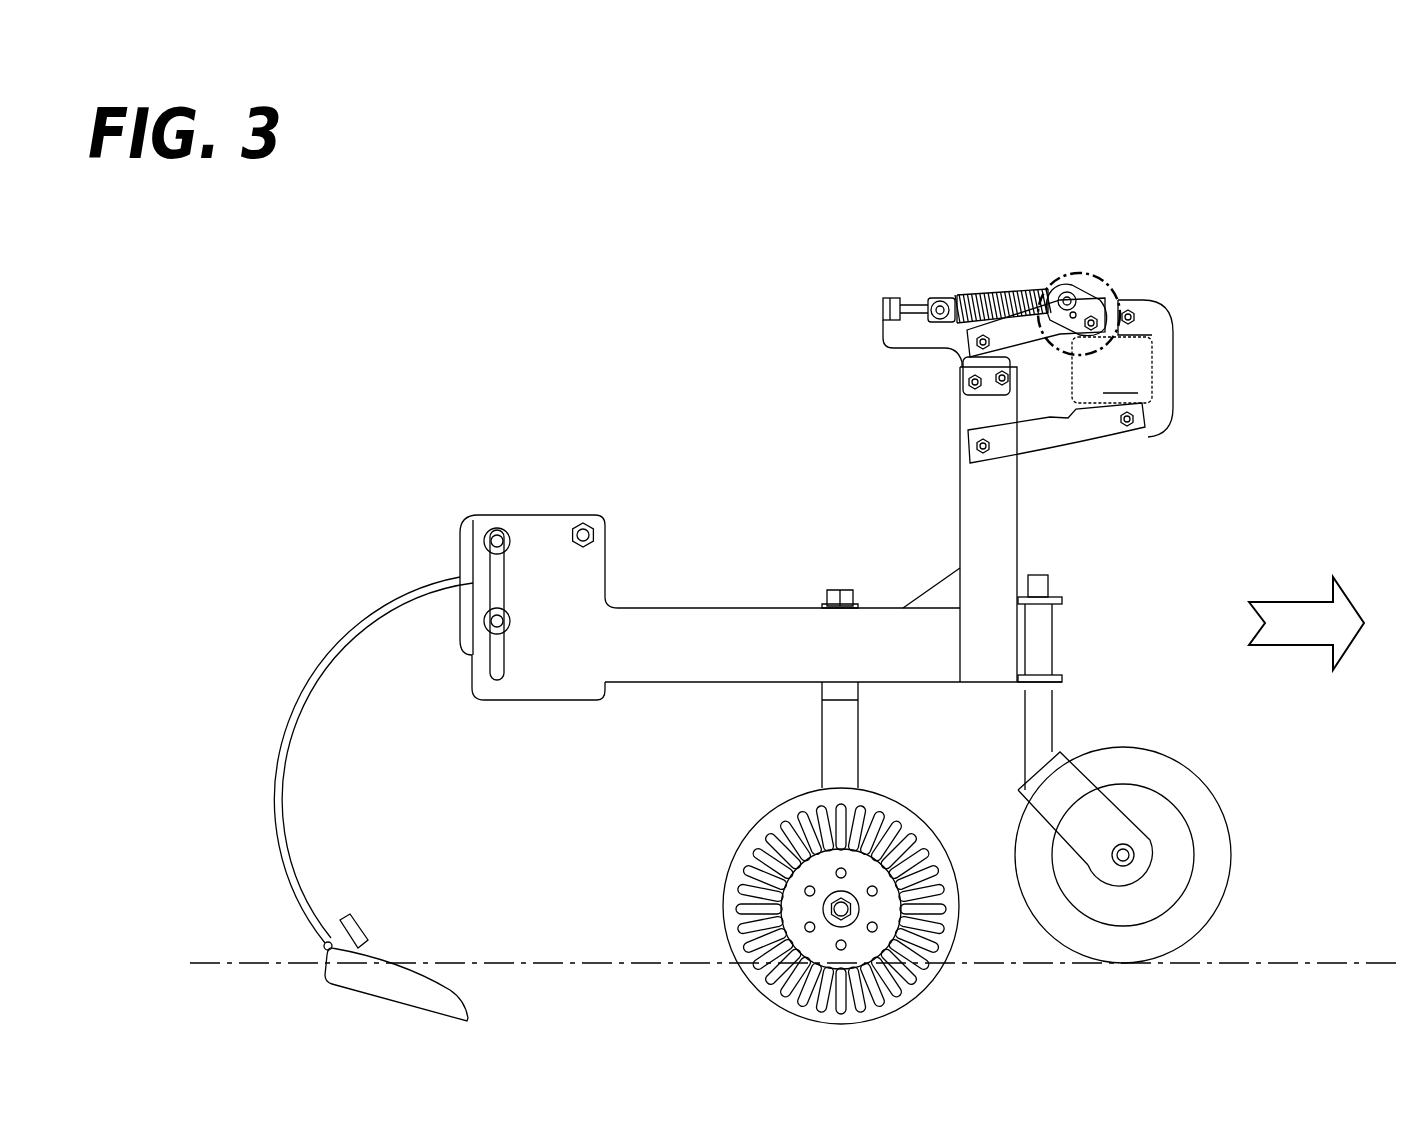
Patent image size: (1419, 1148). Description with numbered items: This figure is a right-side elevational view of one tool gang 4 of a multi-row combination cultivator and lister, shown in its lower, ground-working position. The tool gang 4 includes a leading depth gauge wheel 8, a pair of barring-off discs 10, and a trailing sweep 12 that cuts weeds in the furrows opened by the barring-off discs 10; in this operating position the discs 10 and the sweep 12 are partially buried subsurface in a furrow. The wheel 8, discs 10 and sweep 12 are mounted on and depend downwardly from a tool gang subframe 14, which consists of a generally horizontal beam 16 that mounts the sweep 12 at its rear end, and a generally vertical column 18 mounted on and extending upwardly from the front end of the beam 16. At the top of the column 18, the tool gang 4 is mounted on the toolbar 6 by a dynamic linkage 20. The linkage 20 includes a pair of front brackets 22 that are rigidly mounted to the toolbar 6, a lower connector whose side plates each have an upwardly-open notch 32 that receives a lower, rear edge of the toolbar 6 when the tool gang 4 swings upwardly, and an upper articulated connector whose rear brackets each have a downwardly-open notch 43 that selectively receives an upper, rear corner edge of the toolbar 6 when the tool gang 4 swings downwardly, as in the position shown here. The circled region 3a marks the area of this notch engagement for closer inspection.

The tool gang 4 is at (795, 582).
The leading depth gauge wheel 8 is at (1218, 902).
The barring-off discs 10 is at (725, 915).
The trailing sweep 12 is at (457, 988).
The tool gang subframe 14 is at (987, 683).
The generally horizontal beam 16 is at (717, 683).
The generally vertical column 18 is at (960, 525).
The dynamic linkage 20 is at (948, 223).
The front brackets 22 is at (1173, 362).
The upwardly-open notch 32 is at (1087, 413).
The downwardly-open notch 43 is at (1085, 348).
The detail view circle 3a is at (1185, 257).
The toolbar 6 is at (1112, 370).